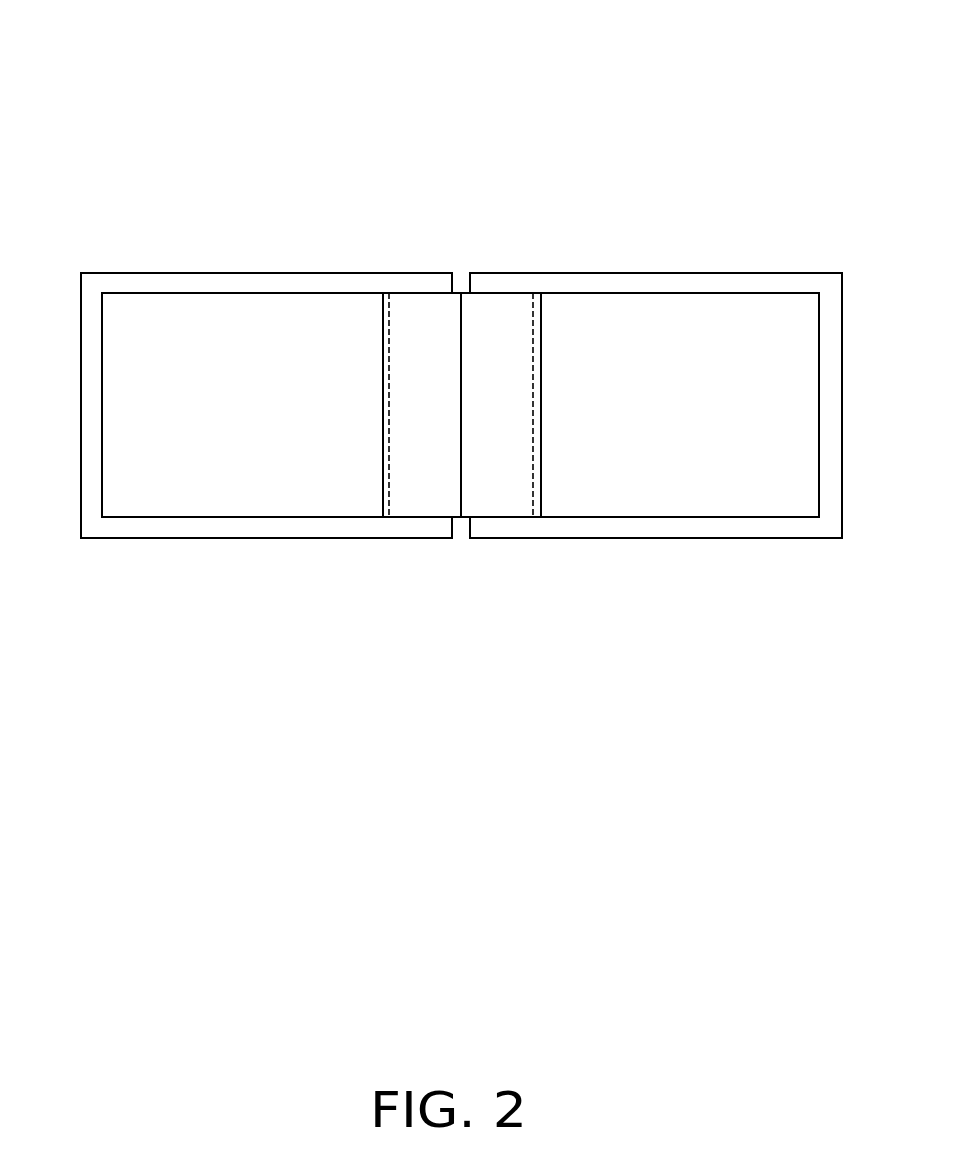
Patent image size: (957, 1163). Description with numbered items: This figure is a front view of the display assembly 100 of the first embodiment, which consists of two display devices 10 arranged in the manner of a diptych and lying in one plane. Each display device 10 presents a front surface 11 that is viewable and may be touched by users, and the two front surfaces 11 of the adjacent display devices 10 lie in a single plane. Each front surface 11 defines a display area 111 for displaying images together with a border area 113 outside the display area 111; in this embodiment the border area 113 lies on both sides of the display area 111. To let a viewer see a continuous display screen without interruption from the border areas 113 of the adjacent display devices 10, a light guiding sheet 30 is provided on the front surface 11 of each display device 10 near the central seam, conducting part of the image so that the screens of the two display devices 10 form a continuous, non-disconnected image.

The display assembly 100 is at (300, 47).
The display device 10 is at (225, 538).
The front surface 11 is at (207, 308).
The display area 111 is at (135, 377).
The border area 113 is at (125, 528).
The light guiding sheet 30 is at (492, 495).